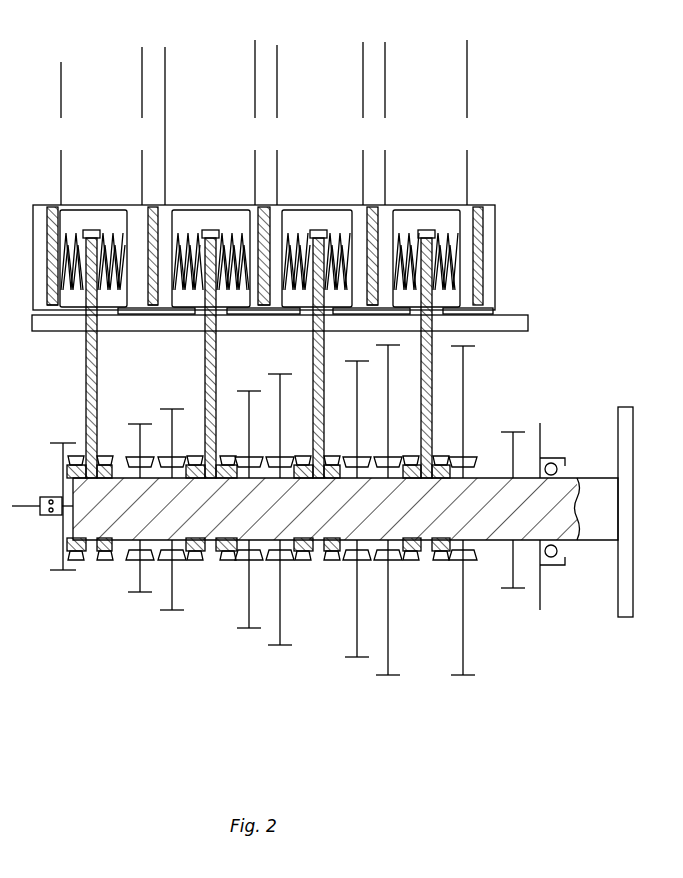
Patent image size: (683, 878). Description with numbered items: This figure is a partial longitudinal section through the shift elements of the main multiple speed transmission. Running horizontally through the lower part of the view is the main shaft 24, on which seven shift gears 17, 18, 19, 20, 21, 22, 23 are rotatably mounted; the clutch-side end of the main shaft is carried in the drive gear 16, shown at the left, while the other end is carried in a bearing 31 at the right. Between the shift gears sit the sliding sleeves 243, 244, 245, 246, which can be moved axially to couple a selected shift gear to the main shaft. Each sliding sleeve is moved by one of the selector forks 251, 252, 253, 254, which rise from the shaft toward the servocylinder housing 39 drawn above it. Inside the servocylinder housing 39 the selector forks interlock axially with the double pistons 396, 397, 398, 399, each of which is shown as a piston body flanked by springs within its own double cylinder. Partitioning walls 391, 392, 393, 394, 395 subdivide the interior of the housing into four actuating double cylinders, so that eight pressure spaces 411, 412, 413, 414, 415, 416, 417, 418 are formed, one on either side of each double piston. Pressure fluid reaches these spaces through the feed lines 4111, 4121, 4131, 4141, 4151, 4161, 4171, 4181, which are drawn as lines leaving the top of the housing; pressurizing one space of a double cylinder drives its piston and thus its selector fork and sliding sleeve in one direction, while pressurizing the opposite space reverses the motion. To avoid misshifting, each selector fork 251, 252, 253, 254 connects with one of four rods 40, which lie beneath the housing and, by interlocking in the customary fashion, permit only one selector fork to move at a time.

The drive gear 16 is at (65, 563).
The shift gear 17 is at (140, 573).
The shift gear 18 is at (172, 590).
The shift gear 19 is at (249, 608).
The shift gear 20 is at (280, 612).
The shift gear 21 is at (357, 630).
The shift gear 22 is at (388, 638).
The shift gear 23 is at (463, 630).
The main shaft 24 is at (102, 515).
The sliding sleeve 243 is at (103, 560).
The sliding sleeve 244 is at (223, 560).
The sliding sleeve 245 is at (330, 560).
The sliding sleeve 246 is at (438, 560).
The selector fork 251 is at (97, 205).
The selector fork 252 is at (207, 205).
The selector fork 253 is at (318, 205).
The selector fork 254 is at (432, 205).
The bearing 31 is at (513, 568).
The servocylinder housing 39 is at (77, 205).
The partitioning wall 391 is at (45, 206).
The partitioning wall 392 is at (160, 205).
The partitioning wall 393 is at (266, 205).
The partitioning wall 394 is at (377, 205).
The partitioning wall 395 is at (483, 208).
The double piston 396 is at (118, 205).
The double piston 397 is at (232, 205).
The double piston 398 is at (338, 205).
The double piston 399 is at (445, 205).
The rod 40 is at (508, 328).
The pressure space 411 is at (385, 297).
The pressure space 412 is at (135, 300).
The pressure space 413 is at (57, 307).
The pressure space 414 is at (250, 300).
The pressure space 415 is at (168, 297).
The pressure space 416 is at (360, 300).
The pressure space 417 is at (297, 300).
The pressure space 418 is at (466, 295).
The feed line 4111 is at (385, 60).
The feed line 4121 is at (142, 66).
The feed line 4131 is at (61, 72).
The feed line 4141 is at (255, 64).
The feed line 4151 is at (165, 66).
The feed line 4161 is at (363, 60).
The feed line 4171 is at (277, 64).
The feed line 4181 is at (467, 60).